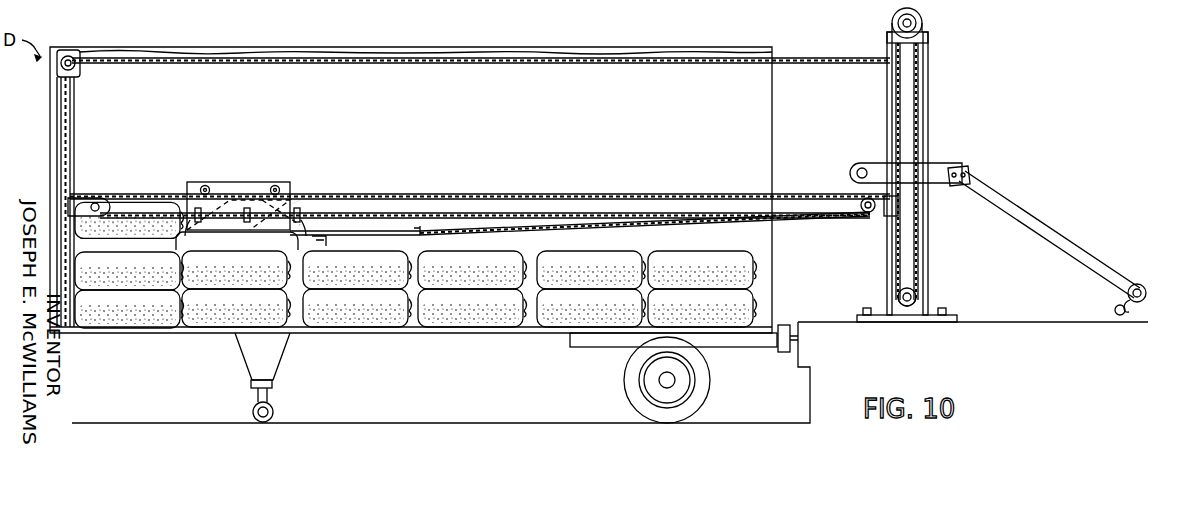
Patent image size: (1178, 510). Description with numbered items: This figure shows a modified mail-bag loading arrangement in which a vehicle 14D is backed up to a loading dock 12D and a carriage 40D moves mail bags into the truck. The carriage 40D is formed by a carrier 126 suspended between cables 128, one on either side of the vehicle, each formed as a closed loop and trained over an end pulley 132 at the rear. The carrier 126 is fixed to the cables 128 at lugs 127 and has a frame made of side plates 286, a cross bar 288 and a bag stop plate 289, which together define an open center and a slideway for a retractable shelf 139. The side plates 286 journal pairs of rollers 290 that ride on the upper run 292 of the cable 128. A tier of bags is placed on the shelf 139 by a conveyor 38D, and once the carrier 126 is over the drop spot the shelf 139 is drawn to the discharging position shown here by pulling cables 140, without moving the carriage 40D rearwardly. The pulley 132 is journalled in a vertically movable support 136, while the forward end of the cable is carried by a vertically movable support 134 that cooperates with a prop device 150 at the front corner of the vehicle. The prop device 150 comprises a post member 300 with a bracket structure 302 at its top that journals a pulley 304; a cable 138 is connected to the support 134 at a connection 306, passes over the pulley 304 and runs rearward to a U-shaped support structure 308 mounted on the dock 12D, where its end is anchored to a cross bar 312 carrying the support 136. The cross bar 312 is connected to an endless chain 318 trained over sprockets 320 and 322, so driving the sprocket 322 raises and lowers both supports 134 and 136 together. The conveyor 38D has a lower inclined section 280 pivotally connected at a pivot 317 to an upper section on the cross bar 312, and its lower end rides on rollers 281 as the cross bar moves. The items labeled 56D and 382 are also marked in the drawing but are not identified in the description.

The loading dock 12D is at (1050, 325).
The vehicle 14D is at (630, 45).
The conveyor 38D is at (1050, 195).
The carriage 40D is at (357, 142).
The bag 56D is at (162, 239).
The carrier 126 is at (289, 153).
The lugs 127 is at (303, 214).
The cables 128 is at (425, 195).
The end pulley 132 is at (870, 213).
The vertically movable support 134 is at (108, 203).
The vertically movable support 136 is at (860, 165).
The cables 138 is at (356, 64).
The retractable shelf 139 is at (368, 229).
The cables 140 is at (487, 232).
The prop device 150 is at (82, 103).
The lower inclined conveyor section 280 is at (1065, 248).
The rollers 281 is at (1122, 319).
The side plates 286 is at (228, 181).
The cross bar 288 is at (320, 244).
The bag stop plate 289 is at (290, 186).
The rollers 290 is at (203, 184).
The upper run 292 is at (512, 196).
The post member 300 is at (74, 128).
The bracket structure 302 is at (80, 73).
The pulley 304 is at (78, 50).
The cable connection 306 is at (80, 191).
The U-shaped support structure 308 is at (942, 92).
The cross bar 312 is at (900, 206).
The pivotal connection 317 is at (970, 178).
The endless chain 318 is at (900, 267).
The sprocket 320 is at (906, 307).
The sprocket 322 is at (922, 20).
The pivot 382 is at (962, 158).